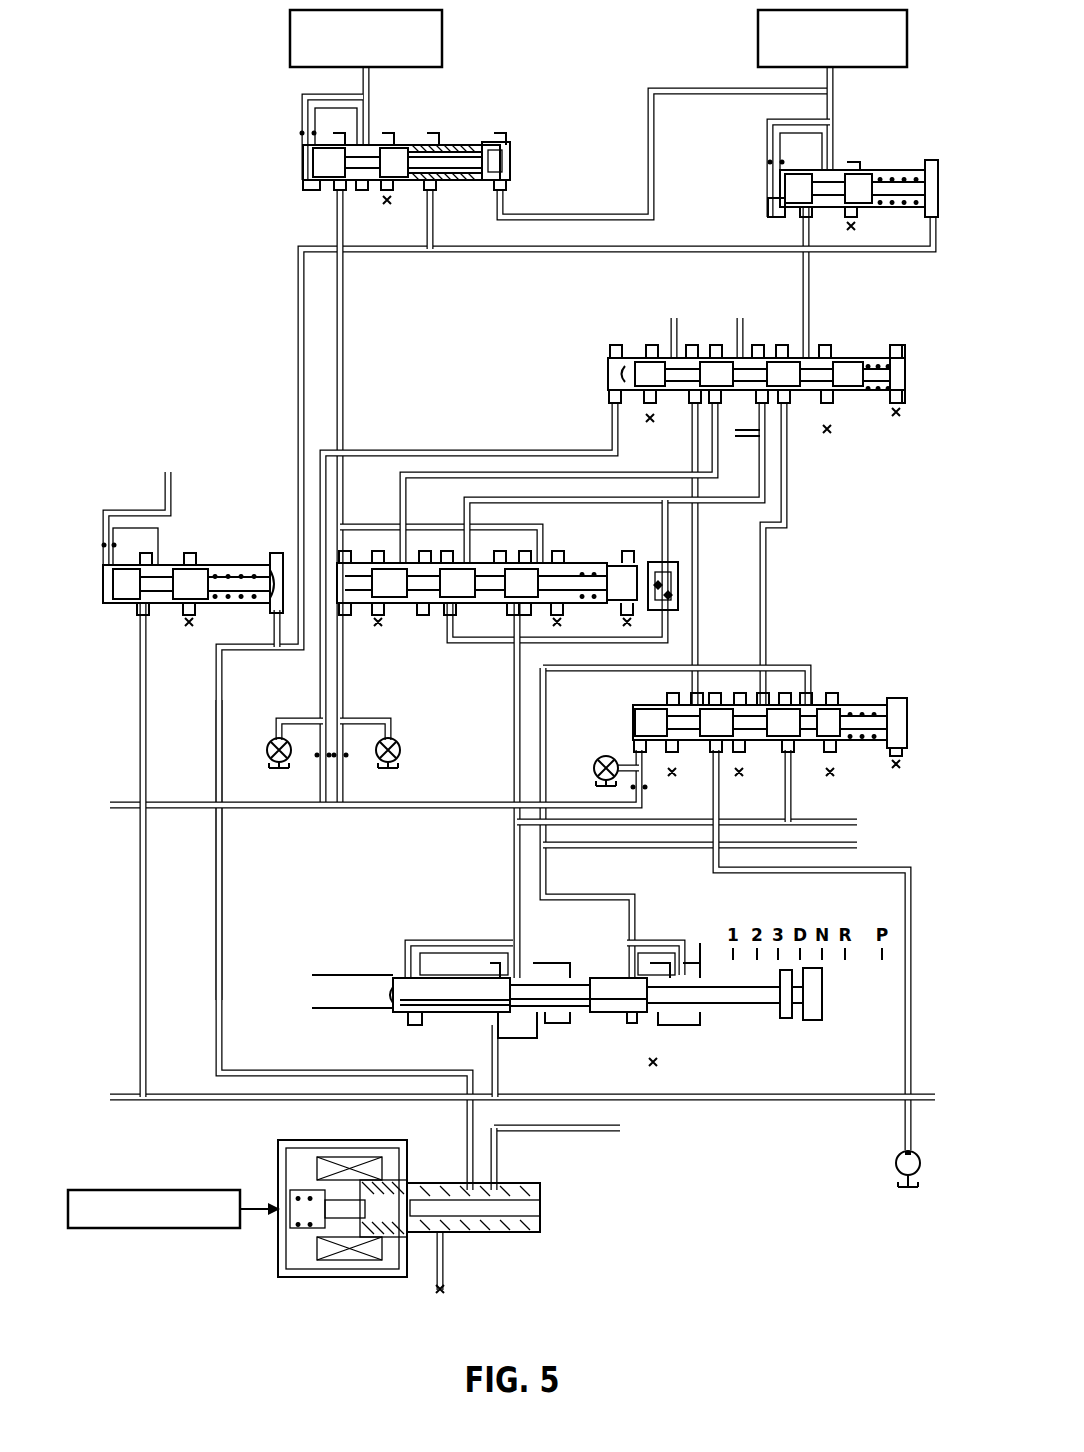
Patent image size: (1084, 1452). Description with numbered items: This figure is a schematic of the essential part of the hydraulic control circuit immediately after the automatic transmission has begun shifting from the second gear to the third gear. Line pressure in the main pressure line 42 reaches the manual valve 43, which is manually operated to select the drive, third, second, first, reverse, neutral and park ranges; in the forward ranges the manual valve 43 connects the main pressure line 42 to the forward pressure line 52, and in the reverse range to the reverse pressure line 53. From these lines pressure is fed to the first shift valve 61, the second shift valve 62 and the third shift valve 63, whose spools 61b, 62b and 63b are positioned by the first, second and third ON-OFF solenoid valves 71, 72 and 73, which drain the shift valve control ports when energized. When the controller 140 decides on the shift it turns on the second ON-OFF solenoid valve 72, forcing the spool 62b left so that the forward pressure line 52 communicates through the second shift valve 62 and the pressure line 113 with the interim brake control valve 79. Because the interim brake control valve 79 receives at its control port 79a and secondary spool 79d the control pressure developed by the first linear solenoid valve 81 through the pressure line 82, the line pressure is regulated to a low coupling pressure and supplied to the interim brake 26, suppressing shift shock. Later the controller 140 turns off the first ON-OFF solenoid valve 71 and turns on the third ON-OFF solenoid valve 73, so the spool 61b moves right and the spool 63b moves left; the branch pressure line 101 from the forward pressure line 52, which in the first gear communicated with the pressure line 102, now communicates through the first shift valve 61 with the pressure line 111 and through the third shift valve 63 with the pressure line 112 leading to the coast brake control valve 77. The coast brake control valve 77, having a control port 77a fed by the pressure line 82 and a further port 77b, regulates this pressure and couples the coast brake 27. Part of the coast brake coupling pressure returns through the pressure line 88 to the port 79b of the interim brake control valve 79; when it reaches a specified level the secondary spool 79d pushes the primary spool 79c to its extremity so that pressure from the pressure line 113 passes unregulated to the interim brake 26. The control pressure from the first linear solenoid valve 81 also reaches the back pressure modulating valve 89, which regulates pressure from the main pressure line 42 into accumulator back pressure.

The interim brake 26 is at (290, 54).
The coast brake 27 is at (757, 52).
The main pressure line 42 is at (740, 1095).
The manual valve 43 is at (389, 968).
The forward pressure line 52 is at (512, 885).
The reverse pressure line 53 is at (640, 906).
The first shift valve 61 is at (756, 706).
The spool of first shift valve 61b is at (660, 712).
The second shift valve 62 is at (507, 569).
The spool of second shift valve 62b is at (516, 588).
The third shift valve 63 is at (756, 386).
The spool of third shift valve 63b is at (652, 367).
The first ON-OFF solenoid valve 71 is at (596, 757).
The second ON-OFF solenoid valve 72 is at (400, 745).
The third ON-OFF solenoid valve 73 is at (270, 739).
The coast brake control valve 77 is at (823, 155).
The control port of coast brake control valve 77a is at (928, 168).
The spool end of valve 77 77b is at (768, 214).
The interim brake control valve 79 is at (381, 139).
The control port of interim brake control valve 79a is at (395, 142).
The port of interim brake control valve 79b is at (471, 122).
The primary spool of interim brake control valve 79c is at (334, 157).
The secondary spool of interim brake control valve 79d is at (455, 185).
The first linear solenoid valve 81 is at (545, 1201).
The pressure line 82 is at (230, 945).
The pressure line 88 is at (612, 213).
The back pressure modulating valve 89 is at (204, 555).
The branch pressure line 101 is at (790, 824).
The pressure line 102 is at (775, 661).
The pressure line 111 is at (770, 566).
The pressure line 112 is at (809, 295).
The pressure line 113 is at (346, 352).
The controller 140 is at (186, 1190).